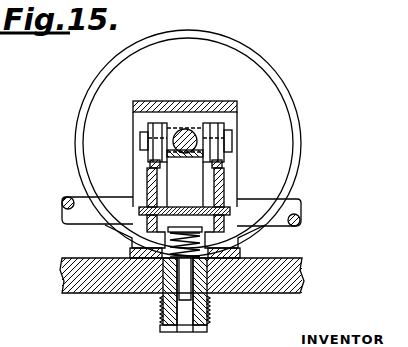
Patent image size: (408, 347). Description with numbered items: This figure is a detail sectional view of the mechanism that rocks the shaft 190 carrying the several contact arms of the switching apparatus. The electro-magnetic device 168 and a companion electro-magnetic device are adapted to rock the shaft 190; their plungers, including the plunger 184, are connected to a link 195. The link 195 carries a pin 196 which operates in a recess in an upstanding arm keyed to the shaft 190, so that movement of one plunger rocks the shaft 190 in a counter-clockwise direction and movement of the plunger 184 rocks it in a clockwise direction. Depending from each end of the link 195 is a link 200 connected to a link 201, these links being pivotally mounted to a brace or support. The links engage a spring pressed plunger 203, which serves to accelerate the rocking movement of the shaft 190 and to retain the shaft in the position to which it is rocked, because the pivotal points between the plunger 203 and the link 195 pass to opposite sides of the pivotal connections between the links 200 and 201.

The electro-magnetic device 168 is at (254, 81).
The plunger 184 is at (188, 129).
The shaft 190 is at (272, 212).
The link 195 is at (160, 123).
The pin 196 is at (140, 140).
The link 200 is at (147, 172).
The link 201 is at (160, 240).
The spring pressed plunger 203 is at (208, 300).